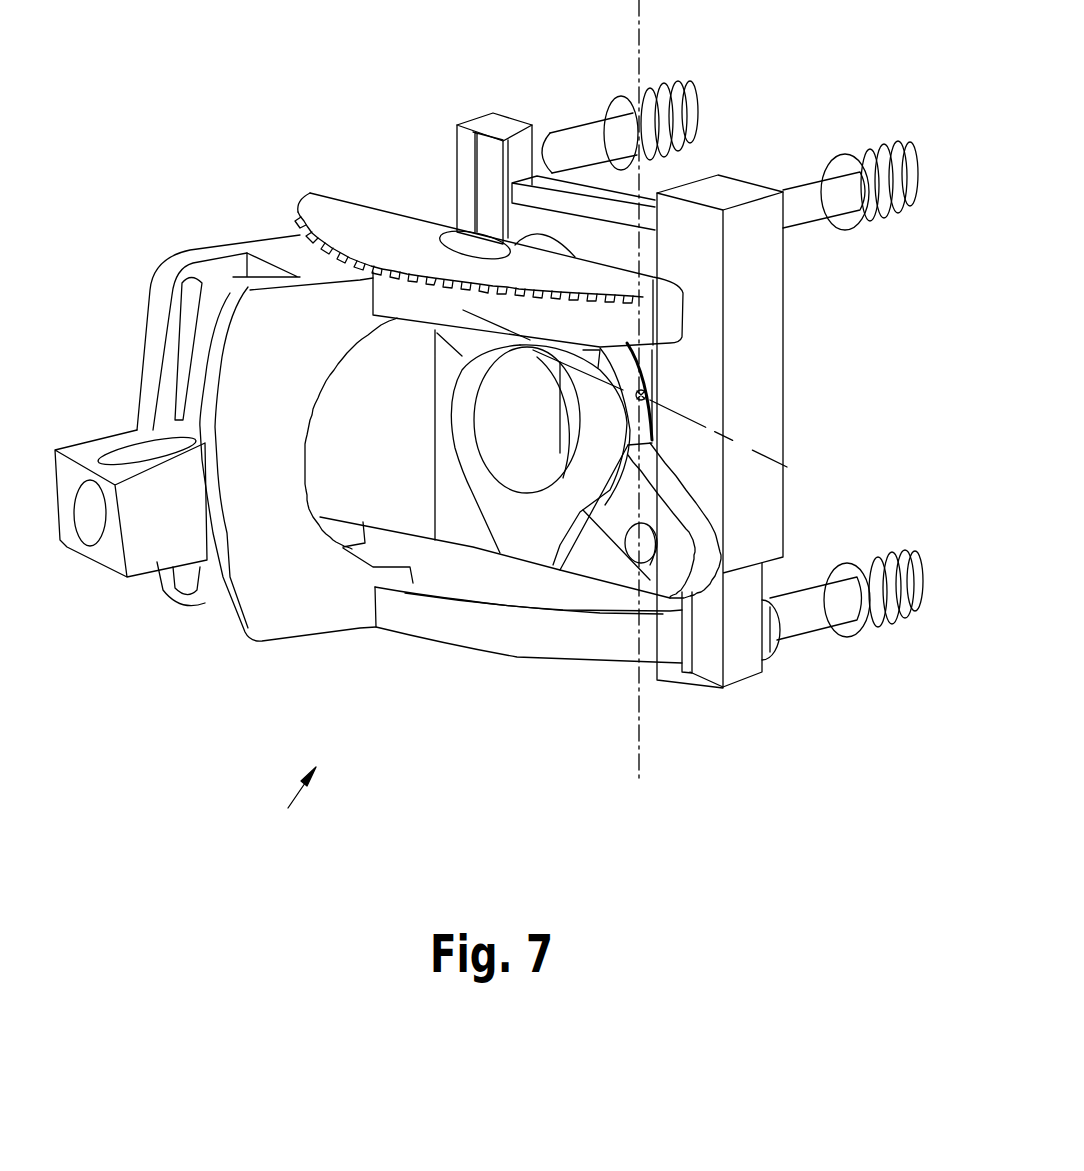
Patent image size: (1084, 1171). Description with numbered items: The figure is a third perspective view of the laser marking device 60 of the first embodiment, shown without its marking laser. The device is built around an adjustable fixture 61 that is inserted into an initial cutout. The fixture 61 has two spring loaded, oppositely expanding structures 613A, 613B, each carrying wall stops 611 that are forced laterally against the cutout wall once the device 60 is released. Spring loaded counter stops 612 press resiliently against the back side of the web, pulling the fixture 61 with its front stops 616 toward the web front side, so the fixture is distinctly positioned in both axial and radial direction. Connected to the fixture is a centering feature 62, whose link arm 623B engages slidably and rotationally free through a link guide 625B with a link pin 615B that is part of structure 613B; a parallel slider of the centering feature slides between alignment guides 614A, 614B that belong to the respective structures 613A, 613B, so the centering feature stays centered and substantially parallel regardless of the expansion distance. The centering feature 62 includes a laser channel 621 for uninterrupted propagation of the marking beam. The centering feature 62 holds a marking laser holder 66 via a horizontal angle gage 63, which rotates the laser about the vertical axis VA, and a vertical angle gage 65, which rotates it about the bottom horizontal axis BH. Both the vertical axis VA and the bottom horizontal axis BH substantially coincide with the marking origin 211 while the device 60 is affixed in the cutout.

The laser marking device 60 is at (283, 797).
The adjustable fixture 61 is at (762, 567).
The wall stops 611 is at (566, 125).
The spring loaded counter stops 612 is at (607, 97).
The spring loaded expanding structure 613A is at (737, 650).
The spring loaded expanding structure 613B is at (421, 166).
The alignment guide 614A is at (483, 173).
The alignment guide 614B is at (680, 680).
The link pin 615B is at (662, 547).
The front stops 616 is at (780, 640).
The centering feature 62 is at (585, 512).
The laser channel 621 is at (533, 490).
The link arm 623B is at (690, 523).
The link guide 625B is at (623, 517).
The horizontal angle gage 63 is at (312, 206).
The vertical angle gage 65 is at (188, 250).
The marking laser holder 66 is at (150, 553).
The marking origin 211 is at (650, 393).
The bottom horizontal axis BH is at (763, 453).
The vertical axis VA is at (640, 40).